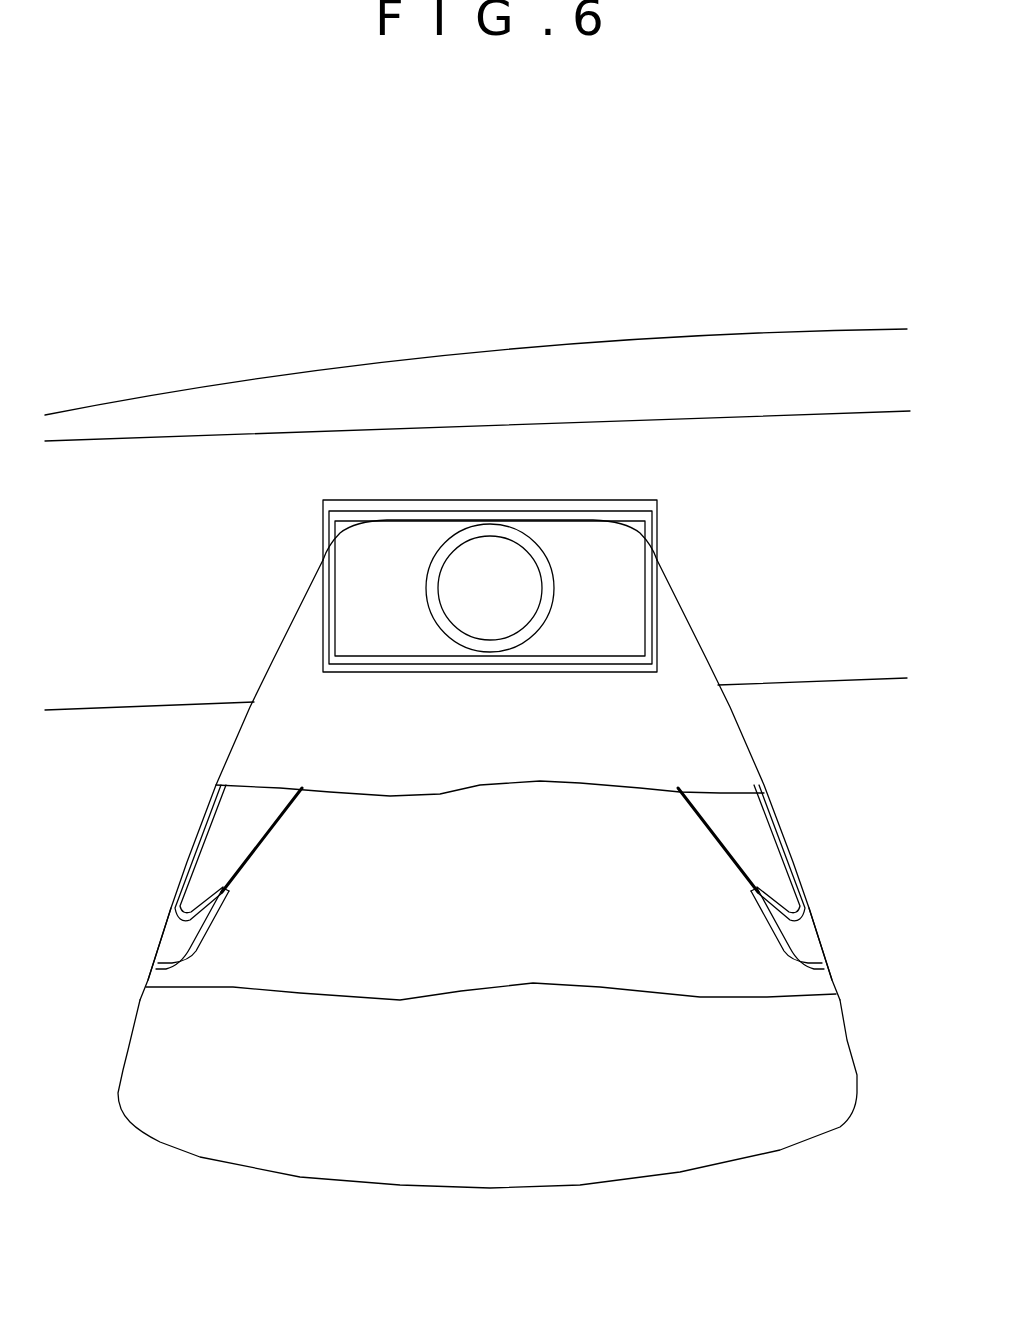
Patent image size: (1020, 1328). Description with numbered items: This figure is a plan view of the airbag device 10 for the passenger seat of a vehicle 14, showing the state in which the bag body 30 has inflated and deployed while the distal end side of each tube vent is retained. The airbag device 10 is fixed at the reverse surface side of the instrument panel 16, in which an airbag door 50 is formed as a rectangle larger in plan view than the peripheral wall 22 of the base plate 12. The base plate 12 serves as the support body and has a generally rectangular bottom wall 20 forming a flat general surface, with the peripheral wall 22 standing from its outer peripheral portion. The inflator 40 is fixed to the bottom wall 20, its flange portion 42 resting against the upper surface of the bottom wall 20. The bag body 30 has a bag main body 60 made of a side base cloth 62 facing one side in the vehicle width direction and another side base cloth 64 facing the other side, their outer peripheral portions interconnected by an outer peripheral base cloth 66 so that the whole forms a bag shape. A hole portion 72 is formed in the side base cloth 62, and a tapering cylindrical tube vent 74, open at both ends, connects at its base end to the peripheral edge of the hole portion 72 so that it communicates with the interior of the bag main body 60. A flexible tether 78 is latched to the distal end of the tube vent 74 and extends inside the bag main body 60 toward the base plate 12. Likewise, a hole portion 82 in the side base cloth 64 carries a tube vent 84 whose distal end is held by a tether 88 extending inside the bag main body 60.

The airbag device 10 is at (740, 564).
The base plate 12 is at (662, 525).
The vehicle 14 is at (642, 322).
The instrument panel 16 is at (158, 698).
The bottom wall 20 is at (323, 532).
The peripheral wall 22 is at (322, 550).
The bag body 30 is at (714, 635).
The inflator 40 is at (455, 614).
The flange portion 42 is at (428, 592).
The airbag door 50 is at (490, 500).
The bag main body 60 is at (714, 746).
The side base cloth 62 is at (195, 815).
The side base cloth 64 is at (782, 826).
The outer peripheral base cloth 66 is at (742, 773).
The hole portion 72 is at (152, 950).
The tube vent 74 is at (208, 948).
The tether 78 is at (289, 808).
The hole portion 82 is at (826, 962).
The tube vent 84 is at (768, 932).
The tether 88 is at (695, 826).